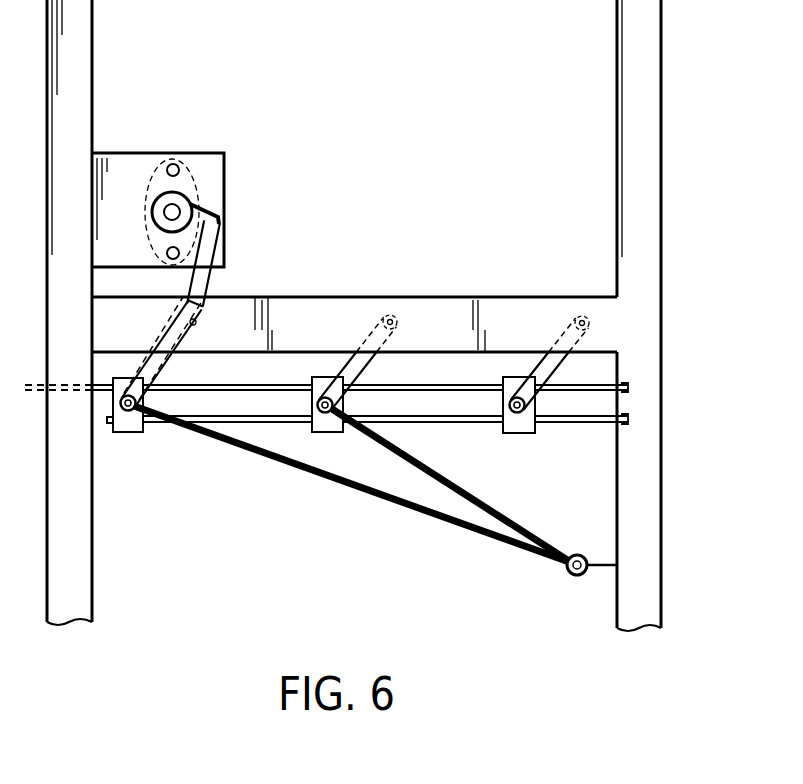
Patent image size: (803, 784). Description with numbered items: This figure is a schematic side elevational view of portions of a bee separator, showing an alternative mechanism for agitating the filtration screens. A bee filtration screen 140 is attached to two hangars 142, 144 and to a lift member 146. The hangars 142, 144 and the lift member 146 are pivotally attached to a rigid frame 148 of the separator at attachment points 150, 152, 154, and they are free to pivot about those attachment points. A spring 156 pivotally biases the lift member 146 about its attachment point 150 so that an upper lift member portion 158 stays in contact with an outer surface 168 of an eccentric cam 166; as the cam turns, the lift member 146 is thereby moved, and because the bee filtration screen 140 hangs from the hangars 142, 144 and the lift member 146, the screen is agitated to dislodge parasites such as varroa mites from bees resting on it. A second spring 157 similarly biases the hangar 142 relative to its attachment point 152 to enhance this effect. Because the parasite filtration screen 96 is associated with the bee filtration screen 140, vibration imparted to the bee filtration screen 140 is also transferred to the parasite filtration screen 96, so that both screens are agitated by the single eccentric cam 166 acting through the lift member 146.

The parasite filtration screen 96 is at (270, 424).
The bee filtration screen 140 is at (437, 384).
The hangar 142 is at (366, 336).
The hangar 144 is at (557, 338).
The lift member 146 is at (206, 312).
The rigid frame 148 is at (313, 333).
The attachment point 150 is at (190, 322).
The attachment point 152 is at (392, 316).
The attachment point 154 is at (592, 323).
The spring 156 is at (372, 497).
The second spring 157 is at (498, 505).
The upper lift member portion 158 is at (220, 232).
The eccentric cam 166 is at (175, 198).
The outer surface 168 is at (190, 206).